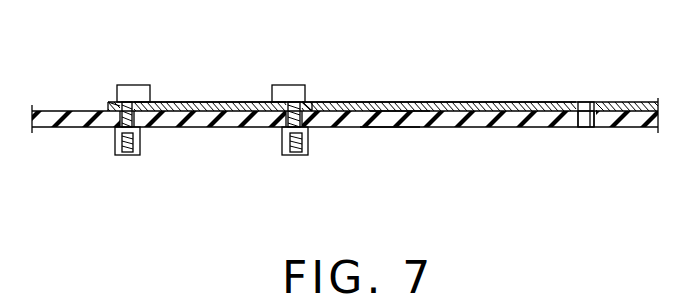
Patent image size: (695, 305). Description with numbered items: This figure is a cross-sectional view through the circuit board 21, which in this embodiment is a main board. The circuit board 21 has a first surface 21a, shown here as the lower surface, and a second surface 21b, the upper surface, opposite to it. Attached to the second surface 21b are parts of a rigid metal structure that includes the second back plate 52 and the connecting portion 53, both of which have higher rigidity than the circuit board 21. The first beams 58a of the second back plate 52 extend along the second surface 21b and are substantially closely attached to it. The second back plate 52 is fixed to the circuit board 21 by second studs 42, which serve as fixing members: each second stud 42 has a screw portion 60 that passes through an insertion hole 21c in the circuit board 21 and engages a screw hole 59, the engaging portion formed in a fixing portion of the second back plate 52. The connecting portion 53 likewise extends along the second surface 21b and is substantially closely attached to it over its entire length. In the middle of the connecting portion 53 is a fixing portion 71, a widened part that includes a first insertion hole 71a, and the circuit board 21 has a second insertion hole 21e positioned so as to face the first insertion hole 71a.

The circuit board 21 is at (449, 130).
The first surface 21a is at (387, 127).
The second surface 21b is at (402, 108).
The insertion hole 21c is at (106, 127).
The second insertion hole 21e is at (586, 128).
The second stud 42 is at (113, 158).
The second back plate 52 is at (238, 100).
The connecting portion 53 is at (521, 100).
The first beam 58a is at (183, 101).
The screw hole 59 is at (108, 106).
The screw portion 60 is at (127, 100).
The fixing portion 71 is at (598, 104).
The first insertion hole 71a is at (586, 104).